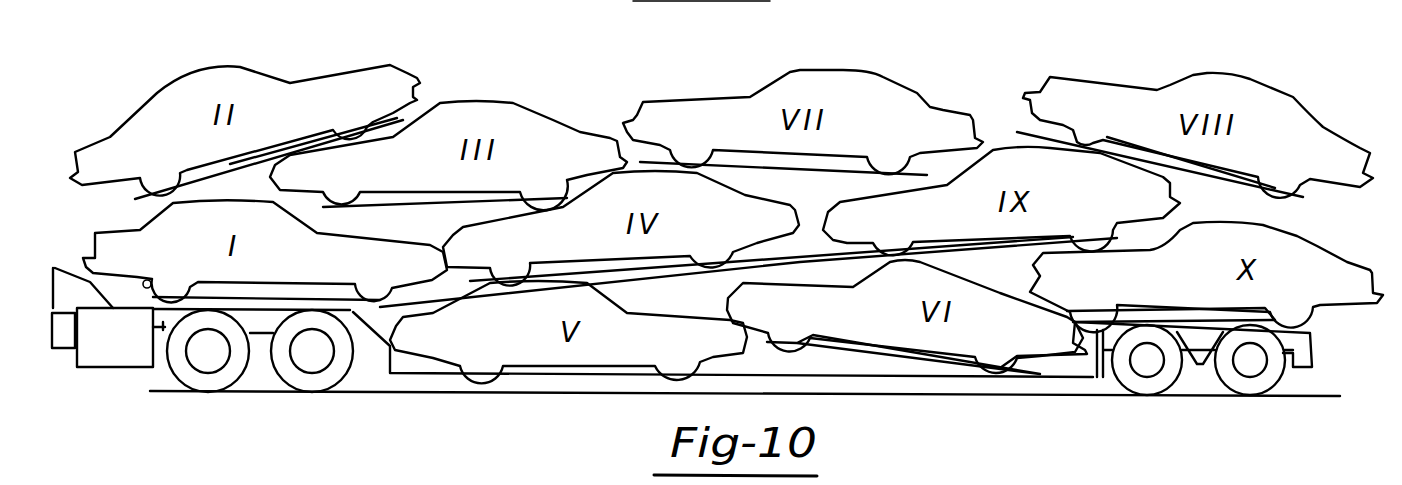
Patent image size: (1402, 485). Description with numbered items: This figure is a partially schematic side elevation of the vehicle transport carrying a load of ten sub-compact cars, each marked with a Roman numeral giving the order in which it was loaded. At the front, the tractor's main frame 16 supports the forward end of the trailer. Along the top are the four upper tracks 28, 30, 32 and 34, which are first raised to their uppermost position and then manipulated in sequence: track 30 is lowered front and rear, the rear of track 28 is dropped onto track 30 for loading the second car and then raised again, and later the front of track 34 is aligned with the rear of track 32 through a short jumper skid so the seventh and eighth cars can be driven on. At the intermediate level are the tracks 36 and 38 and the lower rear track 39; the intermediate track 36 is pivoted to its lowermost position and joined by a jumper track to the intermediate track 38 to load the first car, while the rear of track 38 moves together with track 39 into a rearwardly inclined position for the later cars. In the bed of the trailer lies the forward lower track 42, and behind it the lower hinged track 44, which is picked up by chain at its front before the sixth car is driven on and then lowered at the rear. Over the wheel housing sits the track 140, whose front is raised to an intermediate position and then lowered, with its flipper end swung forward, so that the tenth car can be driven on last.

The main frame 16 is at (165, 327).
The upper track 28 is at (222, 168).
The upper track 30 is at (388, 203).
The upper track 32 is at (779, 167).
The upper track 34 is at (1209, 174).
The intermediate track 36 is at (379, 296).
The intermediate track 38 is at (642, 273).
The lower rear track 39 is at (968, 258).
The track 140 is at (1130, 310).
The forward lower track 42 is at (567, 375).
The lower hinged track 44 is at (845, 348).